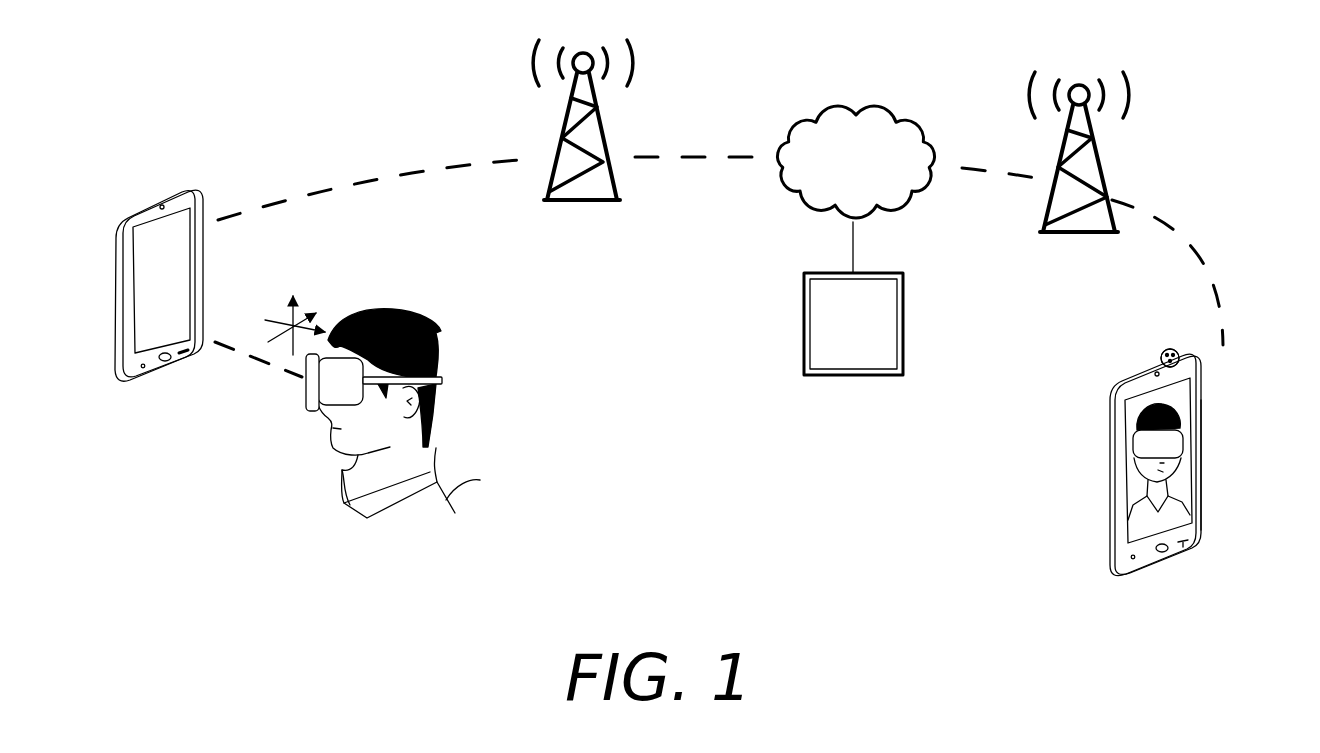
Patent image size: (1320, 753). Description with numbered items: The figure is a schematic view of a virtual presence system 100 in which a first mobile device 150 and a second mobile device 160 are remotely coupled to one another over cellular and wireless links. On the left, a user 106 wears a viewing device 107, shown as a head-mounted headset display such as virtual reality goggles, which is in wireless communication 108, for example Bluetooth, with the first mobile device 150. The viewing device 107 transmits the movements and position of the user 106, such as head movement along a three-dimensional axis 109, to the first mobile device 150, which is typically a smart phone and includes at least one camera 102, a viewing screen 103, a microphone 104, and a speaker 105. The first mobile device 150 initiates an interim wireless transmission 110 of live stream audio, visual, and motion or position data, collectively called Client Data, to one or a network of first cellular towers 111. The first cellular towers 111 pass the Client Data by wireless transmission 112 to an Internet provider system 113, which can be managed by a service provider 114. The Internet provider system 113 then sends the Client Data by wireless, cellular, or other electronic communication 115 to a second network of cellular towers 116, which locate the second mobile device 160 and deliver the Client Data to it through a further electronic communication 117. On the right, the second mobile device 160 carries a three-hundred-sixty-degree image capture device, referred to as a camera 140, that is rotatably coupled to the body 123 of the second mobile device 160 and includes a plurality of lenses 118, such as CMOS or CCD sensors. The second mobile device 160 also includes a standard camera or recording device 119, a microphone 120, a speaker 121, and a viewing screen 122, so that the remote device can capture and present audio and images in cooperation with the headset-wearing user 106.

The virtual presence system 100 is at (325, 90).
The first mobile device 150 is at (170, 176).
The camera 102 is at (158, 205).
The viewing screen 103 is at (152, 267).
The microphone 104 is at (143, 370).
The speaker 105 is at (195, 358).
The user 106 is at (445, 493).
The viewing device 107 is at (311, 402).
The wireless communication 108 is at (216, 344).
The three-dimensional axis 109 is at (296, 322).
The interim wireless transmission 110 is at (268, 198).
The first cellular towers 111 is at (604, 118).
The wireless transmission 112 is at (713, 155).
The Internet provider system 113 is at (845, 103).
The service provider 114 is at (802, 293).
The electronic communication 115 is at (968, 170).
The second network of cellular towers 116 is at (1096, 135).
The electronic communication 117 is at (1206, 252).
The lenses 118 is at (1161, 353).
The recording device 119 is at (1154, 373).
The microphone 120 is at (1134, 560).
The speaker 121 is at (1187, 549).
The viewing screen 122 is at (1172, 398).
The body 123 is at (1203, 484).
The camera 140 is at (1160, 331).
The second mobile device 160 is at (1076, 513).